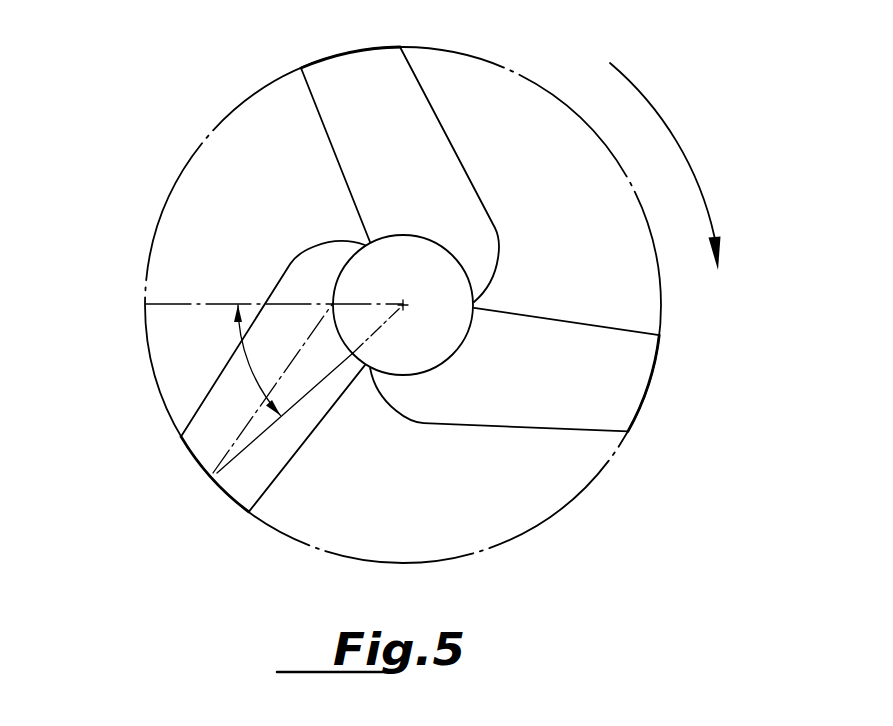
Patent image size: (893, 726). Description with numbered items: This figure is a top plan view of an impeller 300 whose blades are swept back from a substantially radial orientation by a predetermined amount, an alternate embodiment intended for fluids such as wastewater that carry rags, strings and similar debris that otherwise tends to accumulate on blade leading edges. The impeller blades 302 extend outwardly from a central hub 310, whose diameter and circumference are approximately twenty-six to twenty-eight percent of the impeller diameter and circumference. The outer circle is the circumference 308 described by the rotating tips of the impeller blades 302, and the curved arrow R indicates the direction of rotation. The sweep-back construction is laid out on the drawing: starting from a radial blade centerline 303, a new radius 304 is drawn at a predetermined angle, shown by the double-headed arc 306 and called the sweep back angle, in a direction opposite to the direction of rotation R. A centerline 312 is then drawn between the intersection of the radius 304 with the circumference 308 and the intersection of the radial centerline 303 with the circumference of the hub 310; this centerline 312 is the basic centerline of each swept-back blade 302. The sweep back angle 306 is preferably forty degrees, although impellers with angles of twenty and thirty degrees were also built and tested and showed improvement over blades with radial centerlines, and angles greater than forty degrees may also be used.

The impeller 300 is at (168, 140).
The impeller blades 302 is at (347, 93).
The radial blade centerline 303 is at (175, 302).
The new radius 304 is at (300, 398).
The sweep back angle 306 is at (250, 376).
The circumference 308 is at (517, 537).
The hub 310 is at (447, 327).
The centerline 312 is at (243, 437).
The arrow indicating direction of rotation R is at (674, 179).